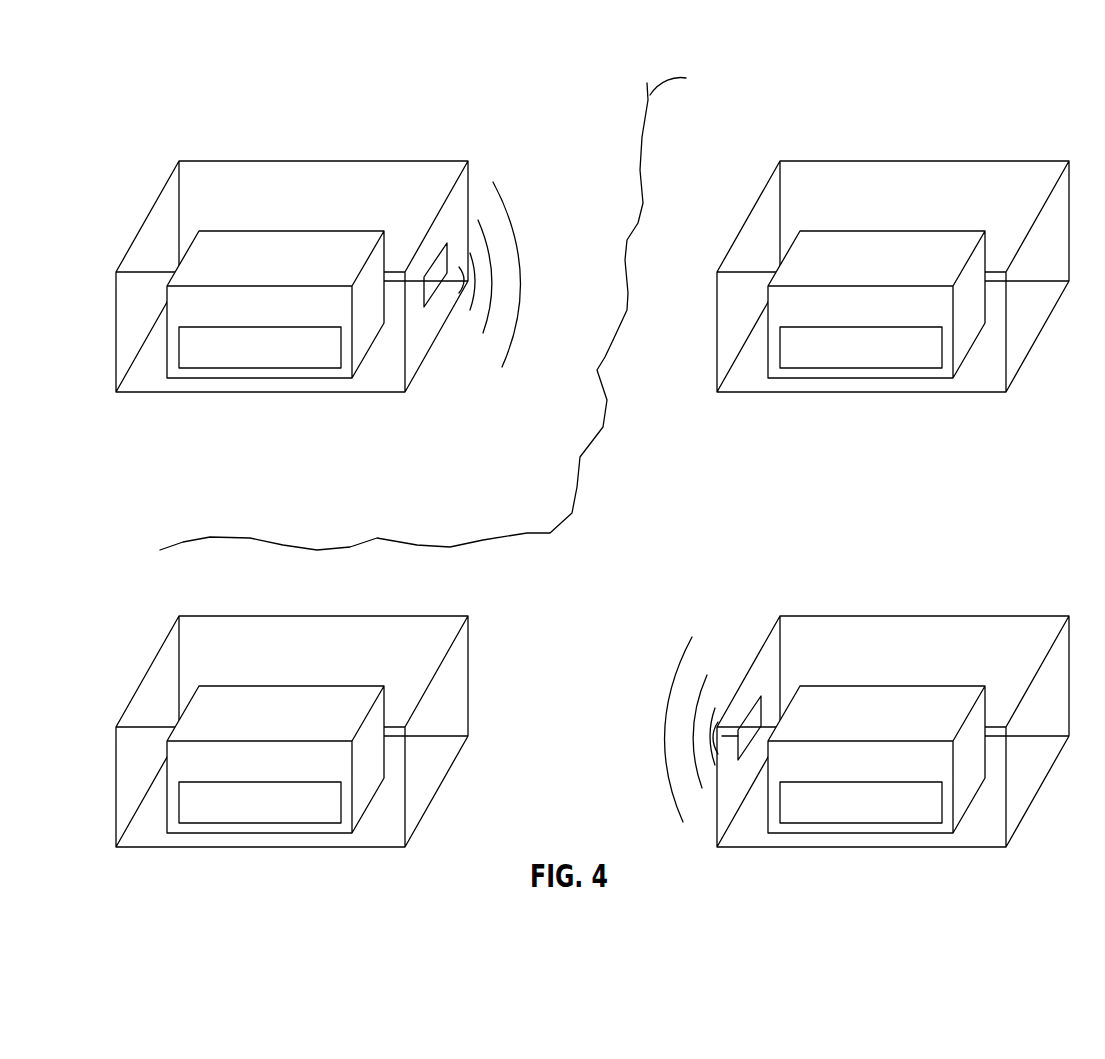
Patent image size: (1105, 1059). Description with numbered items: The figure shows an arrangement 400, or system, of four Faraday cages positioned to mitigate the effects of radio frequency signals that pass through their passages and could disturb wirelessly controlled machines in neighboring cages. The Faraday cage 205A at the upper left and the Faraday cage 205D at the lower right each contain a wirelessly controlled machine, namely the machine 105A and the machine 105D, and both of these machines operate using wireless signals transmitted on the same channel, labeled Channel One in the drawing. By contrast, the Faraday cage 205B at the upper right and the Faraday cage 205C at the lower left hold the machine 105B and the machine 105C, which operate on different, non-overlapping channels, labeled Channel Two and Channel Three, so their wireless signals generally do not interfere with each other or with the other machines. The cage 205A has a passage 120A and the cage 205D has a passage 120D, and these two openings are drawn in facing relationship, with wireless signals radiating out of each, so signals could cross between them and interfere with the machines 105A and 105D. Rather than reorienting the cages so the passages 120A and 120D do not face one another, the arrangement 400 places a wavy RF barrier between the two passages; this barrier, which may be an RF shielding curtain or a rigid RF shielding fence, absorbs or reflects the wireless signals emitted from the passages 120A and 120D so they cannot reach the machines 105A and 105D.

The arrangement 400 is at (127, 69).
The Faraday cage 205A is at (325, 160).
The Faraday cage 205B is at (927, 160).
The Faraday cage 205C is at (325, 615).
The Faraday cage 205D is at (927, 615).
The wirelessly controlled machine 105A is at (167, 330).
The machine 105B is at (953, 335).
The machine 105C is at (167, 790).
The wirelessly controlled machine 105D is at (953, 790).
The passage 120A is at (435, 302).
The passage 120D is at (757, 703).